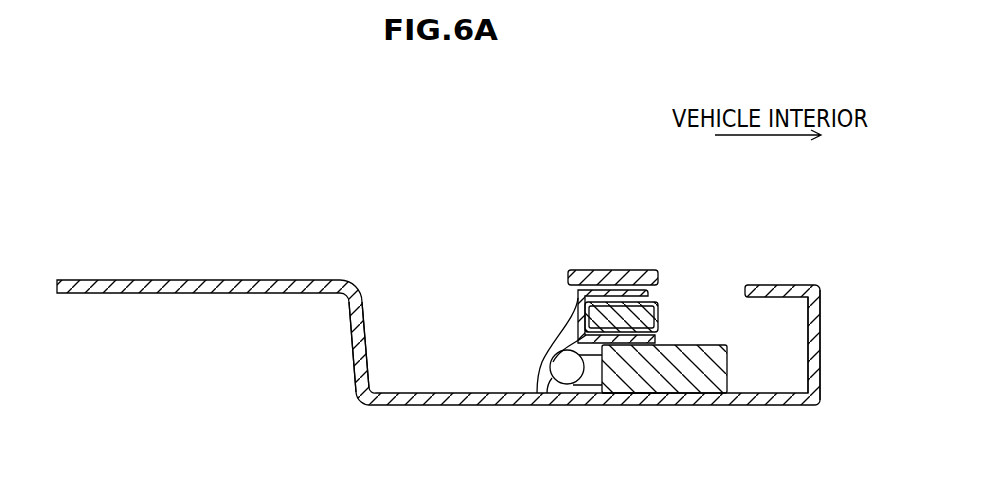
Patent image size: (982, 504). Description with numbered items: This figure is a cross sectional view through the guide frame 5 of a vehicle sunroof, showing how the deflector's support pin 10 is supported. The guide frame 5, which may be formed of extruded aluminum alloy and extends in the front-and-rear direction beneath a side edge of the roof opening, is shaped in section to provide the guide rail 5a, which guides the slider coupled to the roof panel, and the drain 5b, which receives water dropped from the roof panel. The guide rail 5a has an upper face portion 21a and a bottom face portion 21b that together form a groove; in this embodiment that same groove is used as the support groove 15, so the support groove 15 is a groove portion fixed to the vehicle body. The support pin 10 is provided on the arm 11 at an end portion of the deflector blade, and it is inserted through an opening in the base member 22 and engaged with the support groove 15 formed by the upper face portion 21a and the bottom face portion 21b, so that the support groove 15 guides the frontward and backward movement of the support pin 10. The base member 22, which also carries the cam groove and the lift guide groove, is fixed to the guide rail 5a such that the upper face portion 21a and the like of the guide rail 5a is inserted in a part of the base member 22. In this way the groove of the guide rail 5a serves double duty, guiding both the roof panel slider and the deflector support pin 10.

The guide frame 5 is at (197, 287).
The guide rail 5a is at (781, 360).
The drain 5b is at (423, 335).
The support pin 10 is at (638, 401).
The arm 11 is at (703, 370).
The support groove 15 is at (668, 340).
The upper face portion 21a is at (629, 332).
The bottom face portion 21b is at (617, 400).
The base member 22 is at (598, 314).